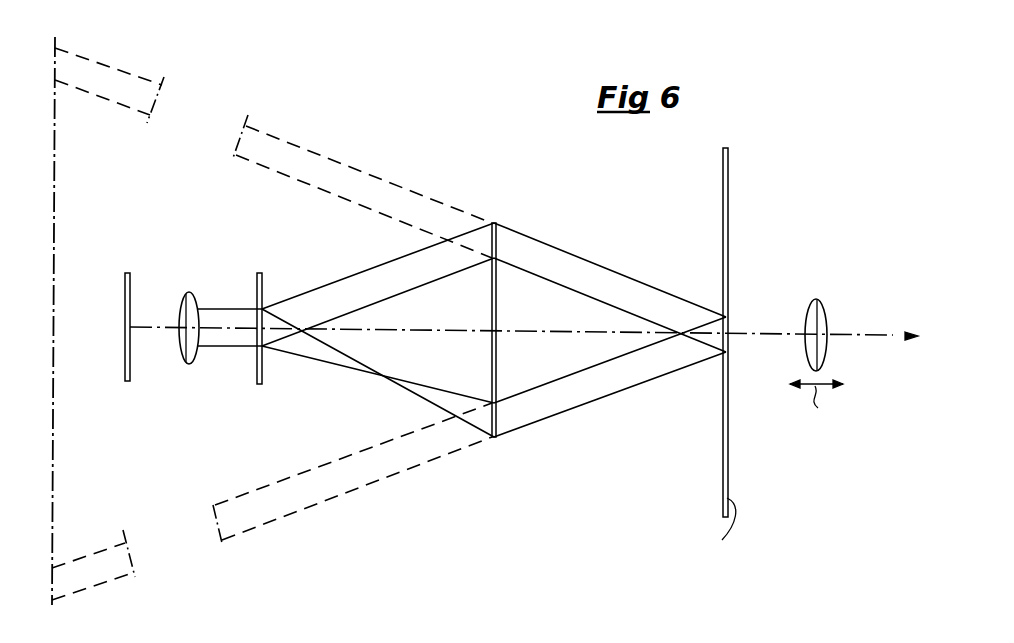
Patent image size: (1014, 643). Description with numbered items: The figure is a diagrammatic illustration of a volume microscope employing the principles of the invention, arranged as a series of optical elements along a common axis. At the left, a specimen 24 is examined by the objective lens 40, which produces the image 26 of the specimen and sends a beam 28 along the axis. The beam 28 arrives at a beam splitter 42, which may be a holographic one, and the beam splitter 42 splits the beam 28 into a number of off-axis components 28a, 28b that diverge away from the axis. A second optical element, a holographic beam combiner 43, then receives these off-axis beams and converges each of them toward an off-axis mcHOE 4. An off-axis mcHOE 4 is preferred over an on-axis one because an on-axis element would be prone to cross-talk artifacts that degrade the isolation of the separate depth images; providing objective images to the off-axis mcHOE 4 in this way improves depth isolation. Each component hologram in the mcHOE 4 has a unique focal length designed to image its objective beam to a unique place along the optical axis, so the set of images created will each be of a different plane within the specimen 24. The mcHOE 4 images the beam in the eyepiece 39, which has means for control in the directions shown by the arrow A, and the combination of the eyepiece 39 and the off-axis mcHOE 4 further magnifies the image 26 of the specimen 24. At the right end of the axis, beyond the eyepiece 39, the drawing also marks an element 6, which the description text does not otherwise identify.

The image 26 is at (53, 230).
The specimen 24 is at (133, 272).
The objective lens 40 is at (189, 291).
The beam 28 is at (222, 308).
The beam splitter 42 is at (262, 280).
The off-axis component 28a is at (332, 283).
The off-axis component 28b is at (400, 364).
The holographic beam combiner 43 is at (496, 224).
The off-axis mcHOE 4 is at (729, 235).
The eyepiece 39 is at (826, 315).
The output focal point 6 is at (917, 335).